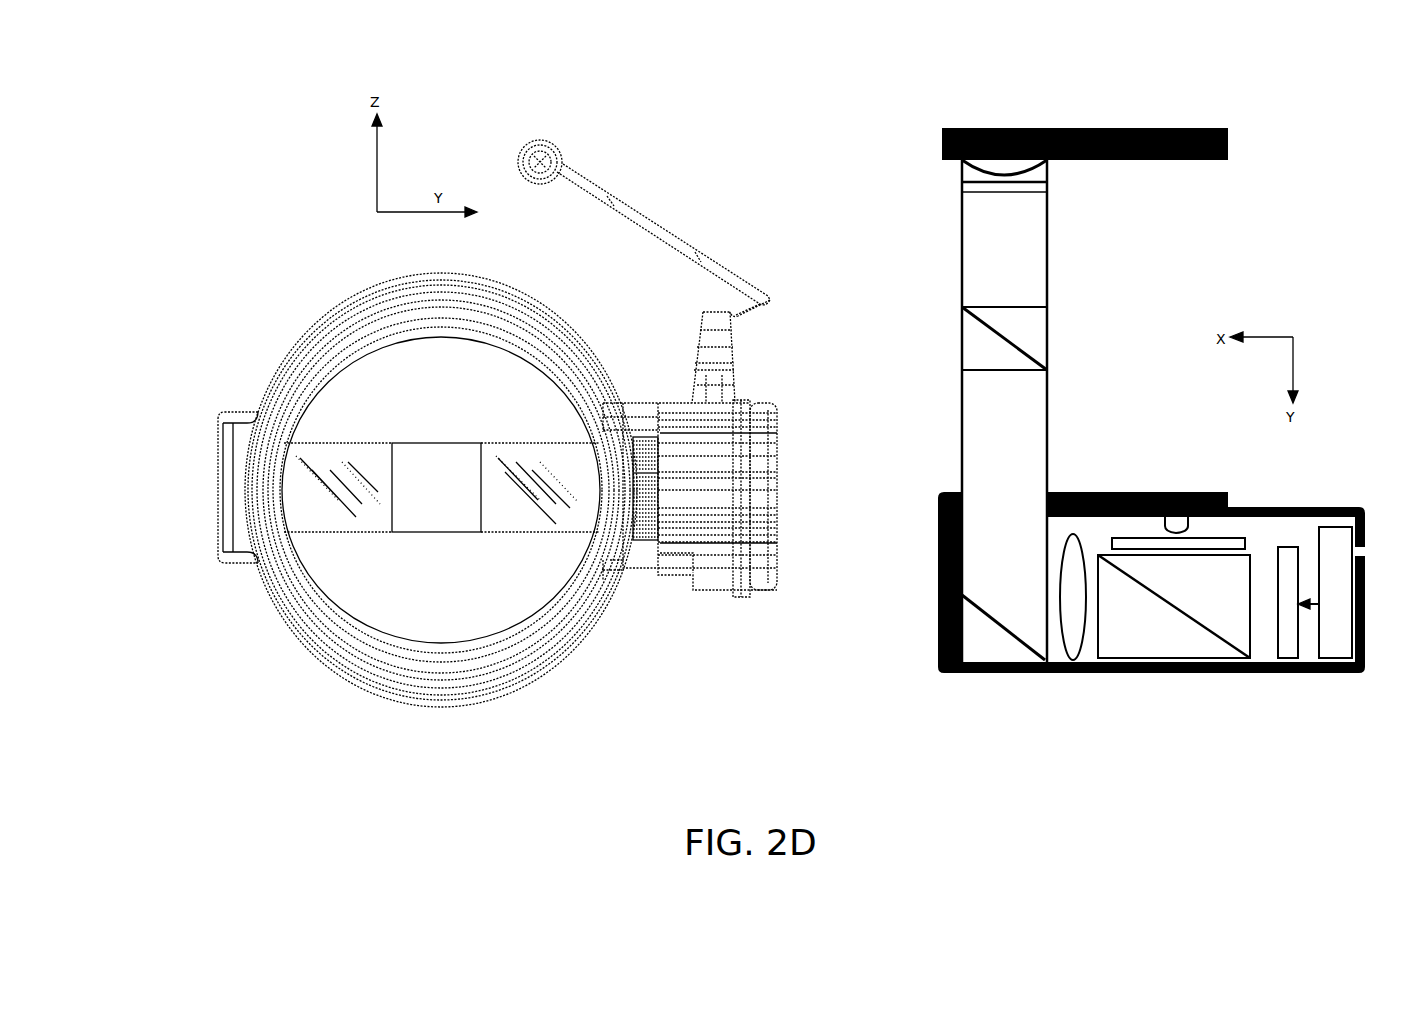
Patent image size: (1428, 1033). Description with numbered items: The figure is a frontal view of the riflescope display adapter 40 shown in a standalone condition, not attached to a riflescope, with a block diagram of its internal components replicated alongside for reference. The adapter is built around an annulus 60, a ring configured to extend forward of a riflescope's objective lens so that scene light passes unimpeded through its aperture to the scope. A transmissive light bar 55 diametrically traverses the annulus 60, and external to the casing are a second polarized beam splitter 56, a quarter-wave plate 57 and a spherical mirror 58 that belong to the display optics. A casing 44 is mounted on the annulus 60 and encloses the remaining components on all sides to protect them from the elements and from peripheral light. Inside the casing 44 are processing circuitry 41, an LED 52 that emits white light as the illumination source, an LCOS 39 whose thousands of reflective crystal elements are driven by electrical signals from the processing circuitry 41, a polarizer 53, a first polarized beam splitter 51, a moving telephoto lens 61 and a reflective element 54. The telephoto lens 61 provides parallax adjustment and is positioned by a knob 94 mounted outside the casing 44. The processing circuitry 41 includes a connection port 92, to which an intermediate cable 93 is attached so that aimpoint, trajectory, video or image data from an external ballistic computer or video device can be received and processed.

The LCOS 39 is at (1290, 548).
The riflescope display adapter 40 is at (557, 767).
The processing circuitry 41 is at (1325, 592).
The casing 44 is at (660, 575).
The first polarized beam splitter 51 is at (1237, 655).
The LED 52 is at (1189, 524).
The polarizer 53 is at (1246, 544).
The reflective element 54 is at (1008, 629).
The transmissive light bar 55 is at (432, 513).
The second polarized beam splitter 56 is at (547, 465).
The quarter-wave plate 57 is at (1030, 193).
The spherical mirror 58 is at (1046, 164).
The annulus 60 is at (358, 658).
The moving telephoto lens 61 is at (1074, 538).
The connection port 92 is at (730, 398).
The intermediate cable 93 is at (650, 222).
The knob 94 is at (635, 542).